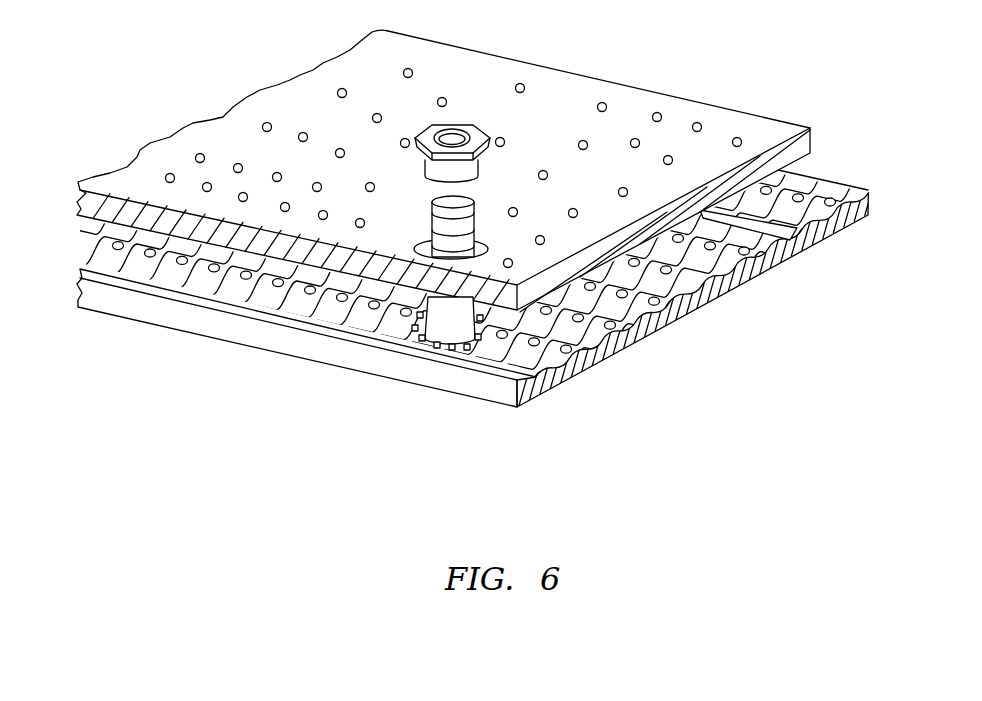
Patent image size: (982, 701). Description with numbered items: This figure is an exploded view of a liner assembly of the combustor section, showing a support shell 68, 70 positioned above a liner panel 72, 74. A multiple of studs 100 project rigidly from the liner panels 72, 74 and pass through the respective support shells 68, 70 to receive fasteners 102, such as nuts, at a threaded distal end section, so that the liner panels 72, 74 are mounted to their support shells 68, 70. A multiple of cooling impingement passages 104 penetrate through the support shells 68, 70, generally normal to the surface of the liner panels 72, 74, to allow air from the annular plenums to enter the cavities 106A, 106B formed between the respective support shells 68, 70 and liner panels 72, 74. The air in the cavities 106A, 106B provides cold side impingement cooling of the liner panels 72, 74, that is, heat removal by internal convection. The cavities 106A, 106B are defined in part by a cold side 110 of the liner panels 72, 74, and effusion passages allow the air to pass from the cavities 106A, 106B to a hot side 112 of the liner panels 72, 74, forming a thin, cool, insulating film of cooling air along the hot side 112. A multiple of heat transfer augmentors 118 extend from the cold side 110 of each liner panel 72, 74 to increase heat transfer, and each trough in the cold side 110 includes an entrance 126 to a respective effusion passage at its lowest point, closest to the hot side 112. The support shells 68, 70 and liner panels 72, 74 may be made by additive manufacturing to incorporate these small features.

The support shell 68 is at (484, 171).
The support shell 70 is at (484, 171).
The liner panel 72 is at (491, 251).
The liner panel 74 is at (491, 251).
The stud 100 is at (463, 203).
The fastener 102 is at (467, 133).
The cooling impingement passage 104 is at (267, 122).
The cavity 106A is at (491, 248).
The cavity 106B is at (675, 293).
The cold side 110 is at (491, 248).
The hot side 112 is at (537, 408).
The heat transfer augmentor 118 is at (165, 273).
The entrance 126 is at (672, 268).